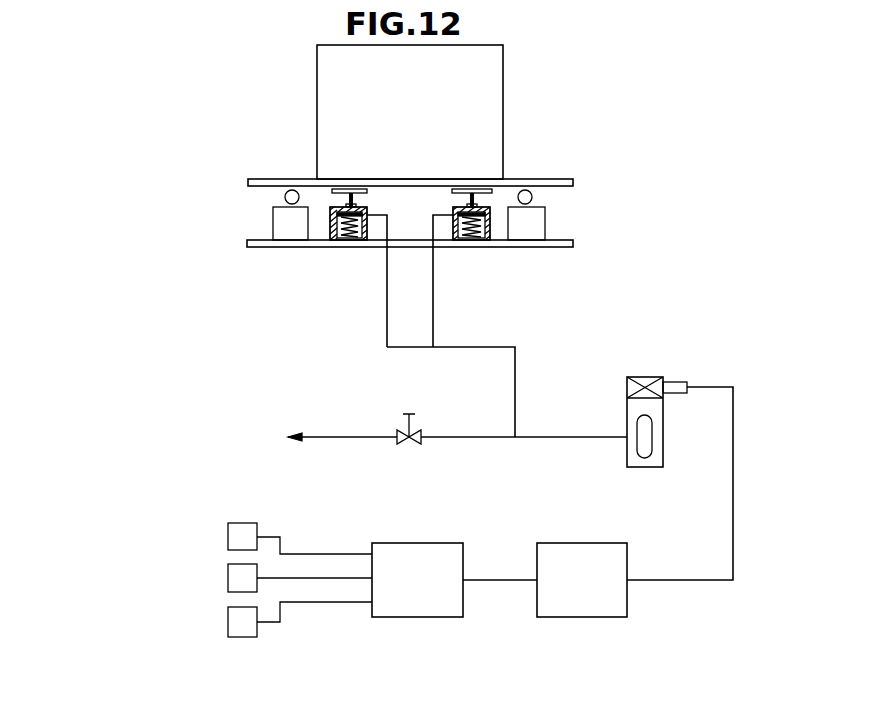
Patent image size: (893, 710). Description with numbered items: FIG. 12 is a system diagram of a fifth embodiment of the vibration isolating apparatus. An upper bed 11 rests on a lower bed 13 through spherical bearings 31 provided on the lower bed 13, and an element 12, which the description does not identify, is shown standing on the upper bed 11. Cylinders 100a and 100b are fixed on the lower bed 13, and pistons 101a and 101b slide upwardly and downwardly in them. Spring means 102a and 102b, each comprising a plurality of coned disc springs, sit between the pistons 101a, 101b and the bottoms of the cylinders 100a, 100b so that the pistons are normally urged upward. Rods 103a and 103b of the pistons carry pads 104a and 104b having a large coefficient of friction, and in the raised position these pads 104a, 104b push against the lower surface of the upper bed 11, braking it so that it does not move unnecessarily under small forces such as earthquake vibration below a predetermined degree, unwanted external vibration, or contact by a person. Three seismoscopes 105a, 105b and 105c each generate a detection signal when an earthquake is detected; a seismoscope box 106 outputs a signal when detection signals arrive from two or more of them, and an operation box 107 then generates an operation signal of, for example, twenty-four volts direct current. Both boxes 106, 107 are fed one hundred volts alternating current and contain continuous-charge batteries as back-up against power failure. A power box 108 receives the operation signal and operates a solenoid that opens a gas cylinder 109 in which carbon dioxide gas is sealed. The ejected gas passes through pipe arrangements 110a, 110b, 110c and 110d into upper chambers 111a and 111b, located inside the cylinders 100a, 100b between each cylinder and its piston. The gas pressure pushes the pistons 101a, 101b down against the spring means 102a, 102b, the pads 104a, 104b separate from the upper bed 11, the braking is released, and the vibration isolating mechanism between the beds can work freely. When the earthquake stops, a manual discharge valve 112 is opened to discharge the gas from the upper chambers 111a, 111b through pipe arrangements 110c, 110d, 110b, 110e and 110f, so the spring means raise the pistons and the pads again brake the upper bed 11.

The upper bed 11 is at (561, 179).
The apparatus body 12 is at (317, 74).
The lower bed 13 is at (560, 240).
The spherical bearing 31 is at (284, 197).
The cylinder 100a is at (367, 221).
The cylinder 100b is at (453, 221).
The piston 101a is at (331, 219).
The piston 101b is at (491, 220).
The spring means 102a is at (355, 222).
The spring means 102b is at (485, 222).
The rod 103a is at (346, 201).
The rod 103b is at (467, 201).
The pad 104a is at (338, 189).
The pad 104b is at (472, 189).
The seismoscope 105a is at (228, 526).
The seismoscope 105b is at (228, 574).
The seismoscope 105c is at (228, 614).
The seismoscope box 106 is at (420, 543).
The operation box 107 is at (582, 543).
The power box 108 is at (652, 377).
The gas cylinder 109 is at (653, 445).
The pipe arrangement 110a is at (575, 437).
The pipe arrangement 110b is at (515, 372).
The pipe arrangement 110c is at (387, 331).
The pipe arrangement 110d is at (433, 331).
The pipe arrangement 110e is at (462, 437).
The pipe arrangement 110f is at (343, 437).
The upper chamber 111a is at (360, 203).
The upper chamber 111b is at (481, 203).
The manual discharge valve 112 is at (408, 445).